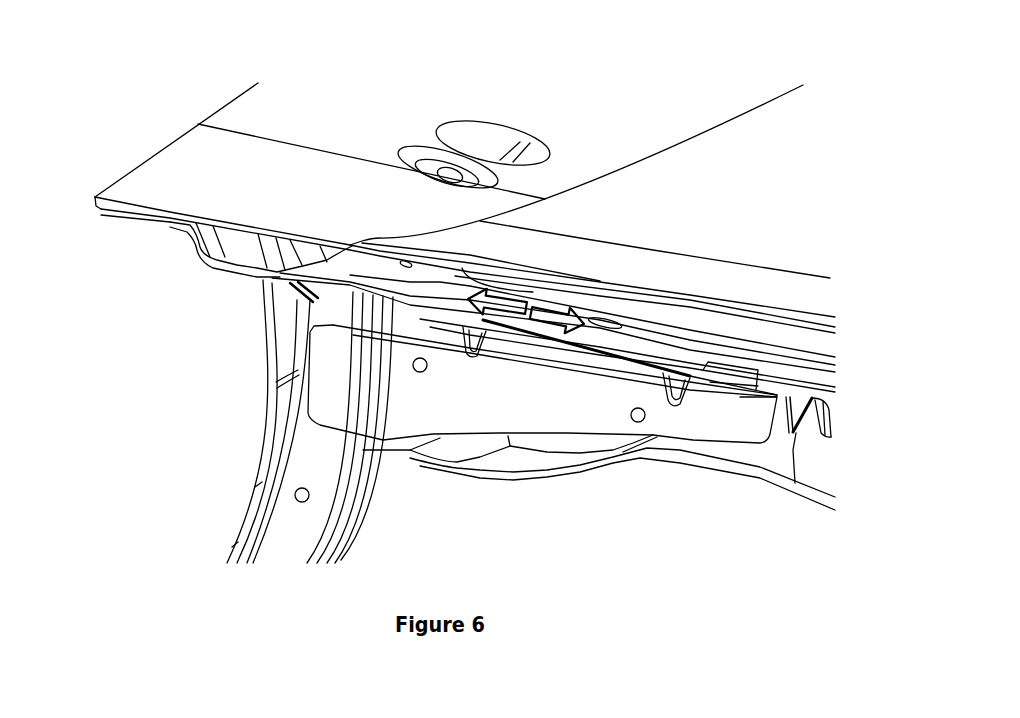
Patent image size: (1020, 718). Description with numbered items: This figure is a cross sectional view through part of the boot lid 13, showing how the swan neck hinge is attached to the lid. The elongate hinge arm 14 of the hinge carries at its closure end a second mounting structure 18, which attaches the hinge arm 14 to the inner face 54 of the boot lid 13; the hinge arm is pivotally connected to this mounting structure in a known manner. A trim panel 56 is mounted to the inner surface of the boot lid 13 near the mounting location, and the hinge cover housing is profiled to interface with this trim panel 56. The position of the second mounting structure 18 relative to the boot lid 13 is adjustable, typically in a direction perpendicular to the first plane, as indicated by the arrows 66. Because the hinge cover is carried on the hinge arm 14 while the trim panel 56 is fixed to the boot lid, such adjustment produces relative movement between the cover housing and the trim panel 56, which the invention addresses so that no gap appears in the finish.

The boot lid 13 is at (204, 157).
The hinge arm 14 is at (288, 517).
The second mounting structure 18 is at (468, 398).
The inner face 54 is at (790, 397).
The trim panel 56 is at (617, 460).
The arrows 66 is at (540, 291).